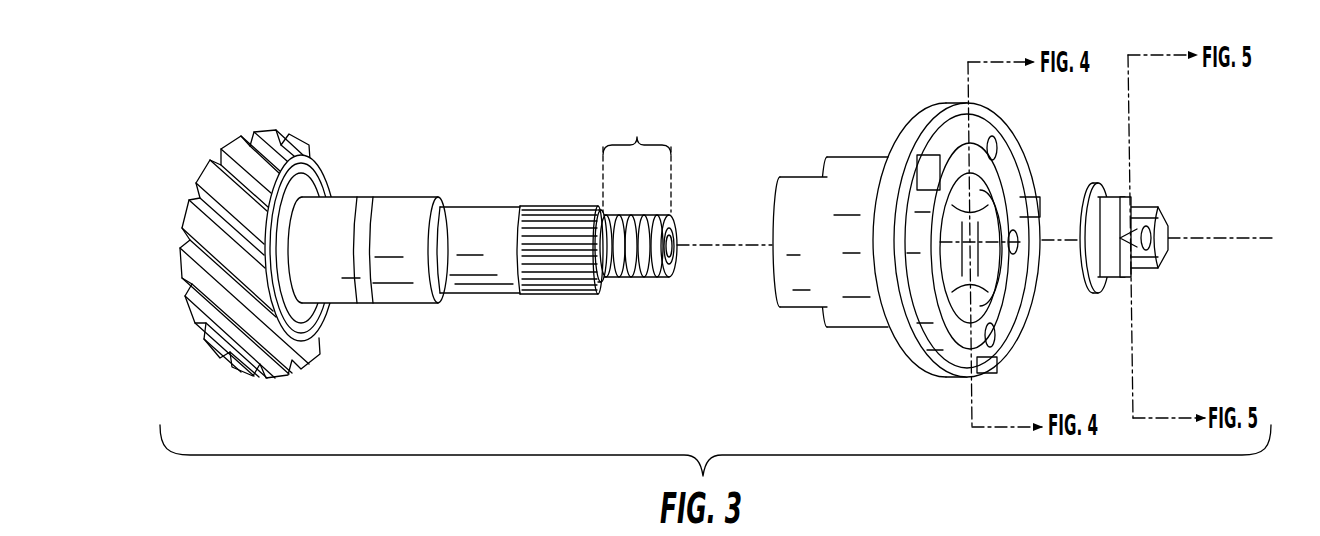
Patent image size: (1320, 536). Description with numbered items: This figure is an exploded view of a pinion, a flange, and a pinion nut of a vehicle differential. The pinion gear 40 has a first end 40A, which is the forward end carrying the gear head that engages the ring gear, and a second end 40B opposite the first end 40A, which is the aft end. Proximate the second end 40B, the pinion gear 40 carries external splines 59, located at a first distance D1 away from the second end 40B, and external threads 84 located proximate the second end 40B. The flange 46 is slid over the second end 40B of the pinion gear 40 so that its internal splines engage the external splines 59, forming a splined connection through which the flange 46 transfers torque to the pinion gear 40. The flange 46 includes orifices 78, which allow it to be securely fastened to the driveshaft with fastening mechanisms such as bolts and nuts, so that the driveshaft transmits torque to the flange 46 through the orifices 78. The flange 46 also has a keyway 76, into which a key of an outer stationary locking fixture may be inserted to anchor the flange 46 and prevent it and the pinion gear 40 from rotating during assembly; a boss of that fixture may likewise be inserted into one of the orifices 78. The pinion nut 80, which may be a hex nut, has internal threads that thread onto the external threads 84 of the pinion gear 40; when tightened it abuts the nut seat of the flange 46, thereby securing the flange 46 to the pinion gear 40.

The pinion gear 40 is at (493, 243).
The first end 40A is at (173, 260).
The second end 40B is at (683, 250).
The external splines 59 is at (557, 260).
The external threads 84 is at (633, 262).
The flange 46 is at (937, 333).
The keyway 76 is at (1015, 186).
The orifices 78 is at (991, 340).
The pinion nut 80 is at (1145, 197).
The first distance D1 is at (637, 160).